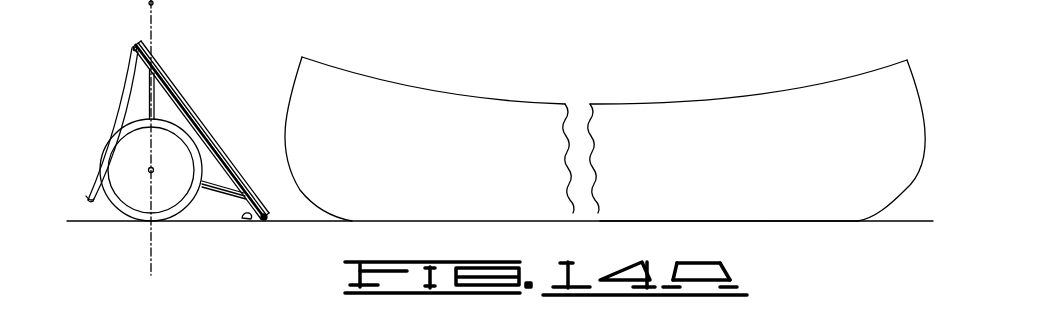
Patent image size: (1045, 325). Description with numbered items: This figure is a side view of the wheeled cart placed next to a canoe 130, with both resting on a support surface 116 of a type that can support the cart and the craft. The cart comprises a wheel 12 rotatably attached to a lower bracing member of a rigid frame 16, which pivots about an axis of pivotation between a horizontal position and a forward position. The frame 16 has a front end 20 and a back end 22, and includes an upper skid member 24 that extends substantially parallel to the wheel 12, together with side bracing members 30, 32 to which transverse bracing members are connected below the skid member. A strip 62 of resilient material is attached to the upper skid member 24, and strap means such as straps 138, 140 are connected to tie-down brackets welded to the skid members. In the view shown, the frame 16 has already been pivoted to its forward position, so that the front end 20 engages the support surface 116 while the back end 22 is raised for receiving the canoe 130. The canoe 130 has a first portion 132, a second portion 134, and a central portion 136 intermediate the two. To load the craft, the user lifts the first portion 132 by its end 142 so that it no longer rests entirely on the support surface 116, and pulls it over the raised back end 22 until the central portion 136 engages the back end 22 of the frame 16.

The wheel 12 is at (147, 207).
The frame 16 is at (201, 109).
The front end 20 is at (268, 218).
The back end 22 is at (134, 44).
The upper skid member 24 is at (177, 98).
The side bracing member 30 is at (150, 97).
The side bracing member 32 is at (212, 188).
The strip of resilient material 62 is at (193, 117).
The support surface 116 is at (893, 221).
The canoe 130 is at (626, 96).
The first portion 132 is at (435, 192).
The second portion 134 is at (772, 205).
The central portion 136 is at (585, 197).
The strap 138 is at (87, 195).
The strap 140 is at (245, 221).
The end 142 is at (323, 75).